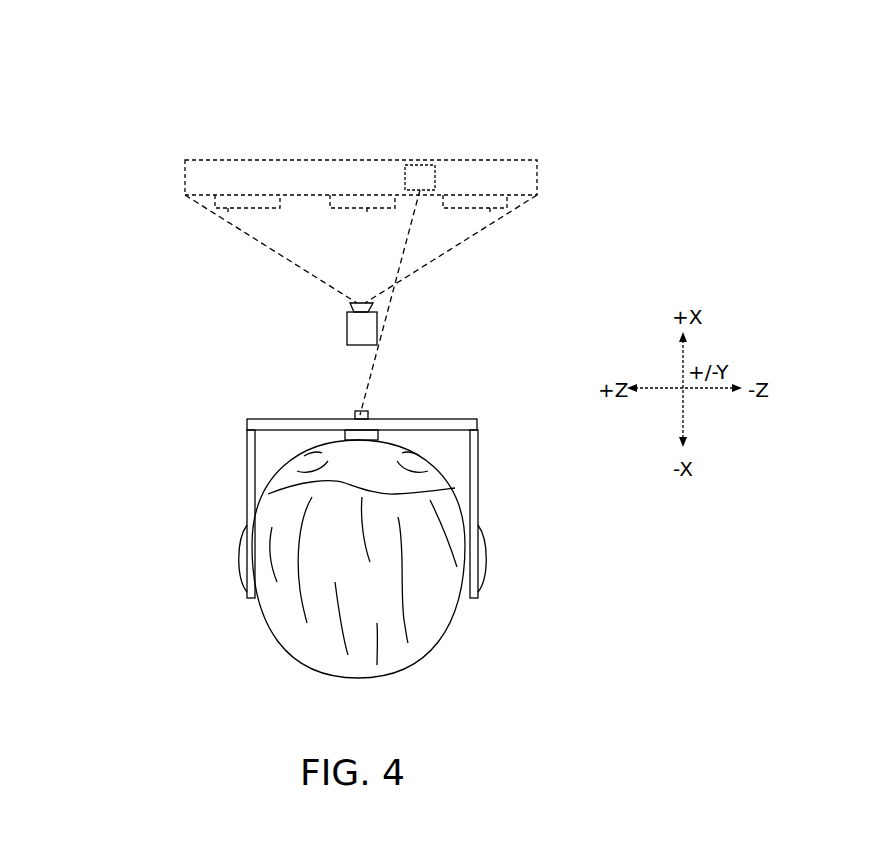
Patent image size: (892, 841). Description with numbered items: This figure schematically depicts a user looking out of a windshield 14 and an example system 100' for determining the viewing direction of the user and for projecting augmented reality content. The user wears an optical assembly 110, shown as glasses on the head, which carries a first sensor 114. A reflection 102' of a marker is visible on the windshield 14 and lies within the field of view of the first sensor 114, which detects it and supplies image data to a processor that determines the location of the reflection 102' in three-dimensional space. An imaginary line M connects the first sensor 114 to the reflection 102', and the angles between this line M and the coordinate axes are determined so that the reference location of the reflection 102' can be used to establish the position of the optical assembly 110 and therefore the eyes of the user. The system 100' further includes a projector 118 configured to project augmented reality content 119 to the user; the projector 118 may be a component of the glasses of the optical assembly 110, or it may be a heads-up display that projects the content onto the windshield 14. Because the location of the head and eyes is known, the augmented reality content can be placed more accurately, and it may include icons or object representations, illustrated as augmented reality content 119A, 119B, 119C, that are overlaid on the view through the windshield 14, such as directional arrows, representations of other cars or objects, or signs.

The system 100' is at (139, 72).
The windshield 14 is at (482, 160).
The reflection of the marker 102' is at (408, 150).
The augmented reality content 119 is at (365, 220).
The augmented reality content 119A is at (228, 212).
The augmented reality content 119B is at (367, 212).
The augmented reality content 119C is at (490, 212).
The projector 118 is at (347, 326).
The imaginary line M is at (380, 360).
The first sensor 114 is at (352, 412).
The optical assembly 110 is at (239, 512).